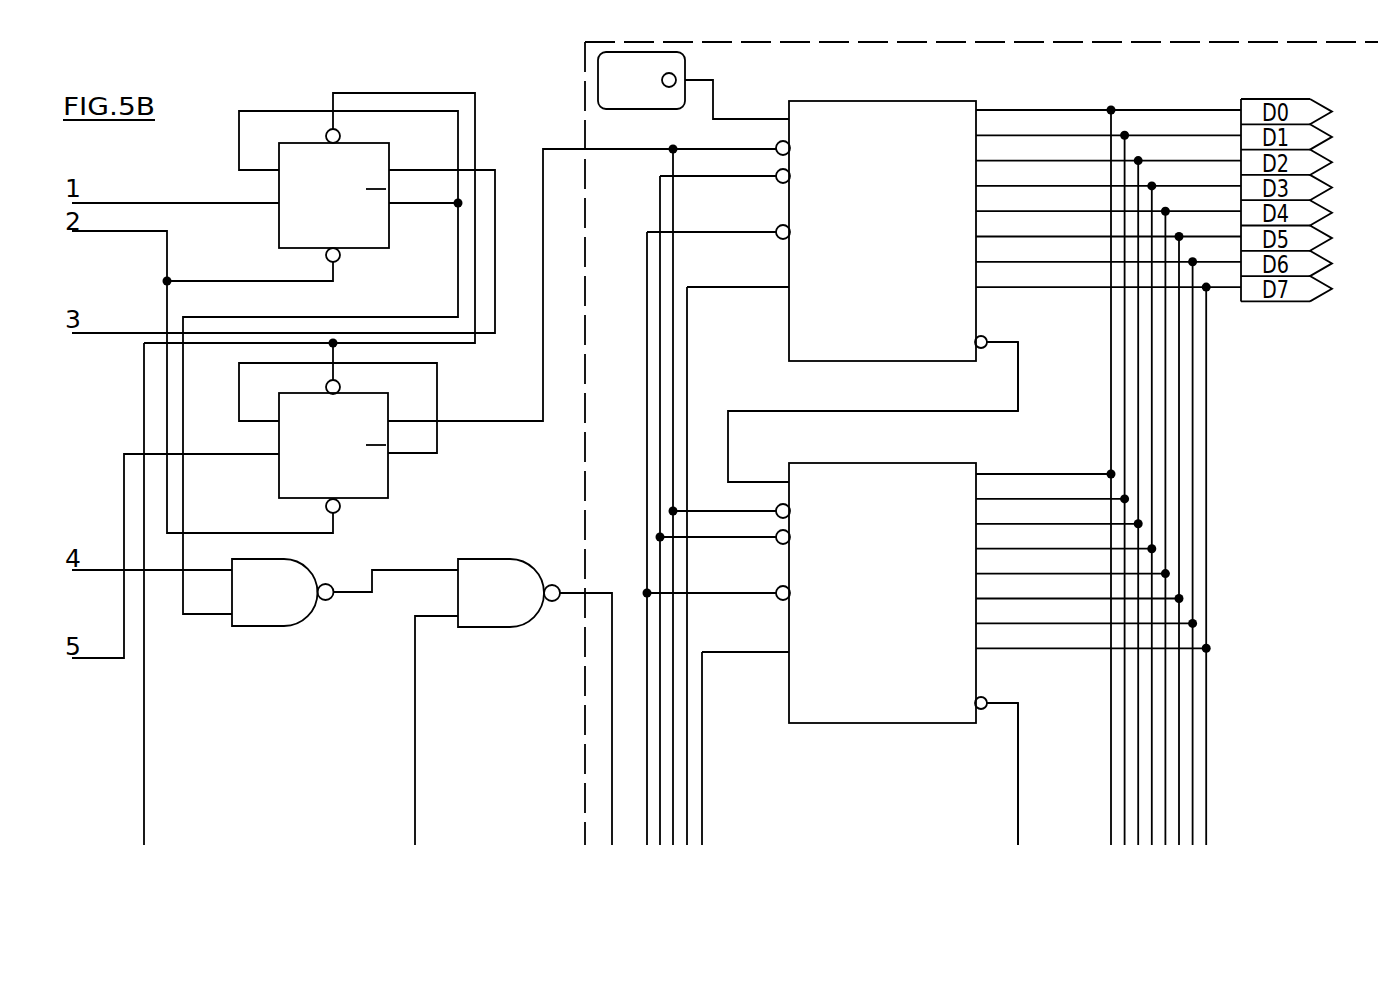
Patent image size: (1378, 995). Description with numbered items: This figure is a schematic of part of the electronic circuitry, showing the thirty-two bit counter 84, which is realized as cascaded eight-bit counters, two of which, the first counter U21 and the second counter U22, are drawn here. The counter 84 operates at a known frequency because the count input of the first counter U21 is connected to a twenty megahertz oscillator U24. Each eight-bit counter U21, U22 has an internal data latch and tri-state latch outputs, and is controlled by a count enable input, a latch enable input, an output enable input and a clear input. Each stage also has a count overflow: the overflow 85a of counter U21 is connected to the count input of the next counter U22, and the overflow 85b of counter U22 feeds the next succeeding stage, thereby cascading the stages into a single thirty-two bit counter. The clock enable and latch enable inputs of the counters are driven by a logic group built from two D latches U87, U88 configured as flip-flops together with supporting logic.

The counter 84 is at (1178, 42).
The overflow 85a is at (1018, 374).
The overflow 85b is at (1018, 734).
The 8-bit counter U21 is at (892, 101).
The 8-bit counter U22 is at (892, 463).
The oscillator U24 is at (685, 72).
The D latch U87 is at (320, 143).
The D latch U88 is at (388, 487).